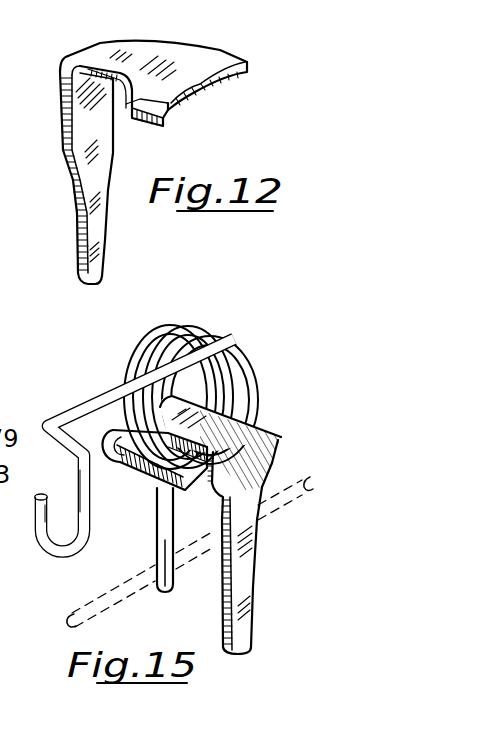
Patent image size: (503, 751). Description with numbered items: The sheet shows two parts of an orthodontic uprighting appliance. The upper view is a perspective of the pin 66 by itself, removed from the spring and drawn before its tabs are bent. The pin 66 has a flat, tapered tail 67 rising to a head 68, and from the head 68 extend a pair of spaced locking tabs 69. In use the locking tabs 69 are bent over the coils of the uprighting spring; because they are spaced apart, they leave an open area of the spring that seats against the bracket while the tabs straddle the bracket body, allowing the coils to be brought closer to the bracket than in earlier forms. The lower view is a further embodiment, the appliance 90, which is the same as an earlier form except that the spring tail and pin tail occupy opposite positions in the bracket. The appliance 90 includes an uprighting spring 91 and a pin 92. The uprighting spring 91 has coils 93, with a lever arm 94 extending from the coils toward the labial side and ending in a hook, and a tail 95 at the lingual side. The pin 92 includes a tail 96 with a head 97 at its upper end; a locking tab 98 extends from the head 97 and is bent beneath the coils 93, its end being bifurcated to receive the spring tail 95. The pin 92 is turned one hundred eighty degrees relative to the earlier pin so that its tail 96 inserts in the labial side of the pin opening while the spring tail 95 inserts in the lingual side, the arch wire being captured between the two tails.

In FIG. 12, the pin 66 is at (68, 52).
In FIG. 12, the tail 67 is at (92, 163).
In FIG. 12, the head 68 is at (122, 55).
In FIG. 12, the locking tabs 69 is at (242, 50).
In FIG. 15, the appliance 90 is at (216, 365).
In FIG. 15, the uprighting spring 91 is at (174, 320).
In FIG. 15, the coils 93 is at (202, 318).
In FIG. 15, the pin 92 is at (283, 436).
In FIG. 15, the lever arm 94 is at (88, 405).
In FIG. 15, the tail 95 is at (162, 533).
In FIG. 15, the tail 96 is at (246, 552).
In FIG. 15, the head 97 is at (208, 422).
In FIG. 15, the locking tab 98 is at (140, 460).